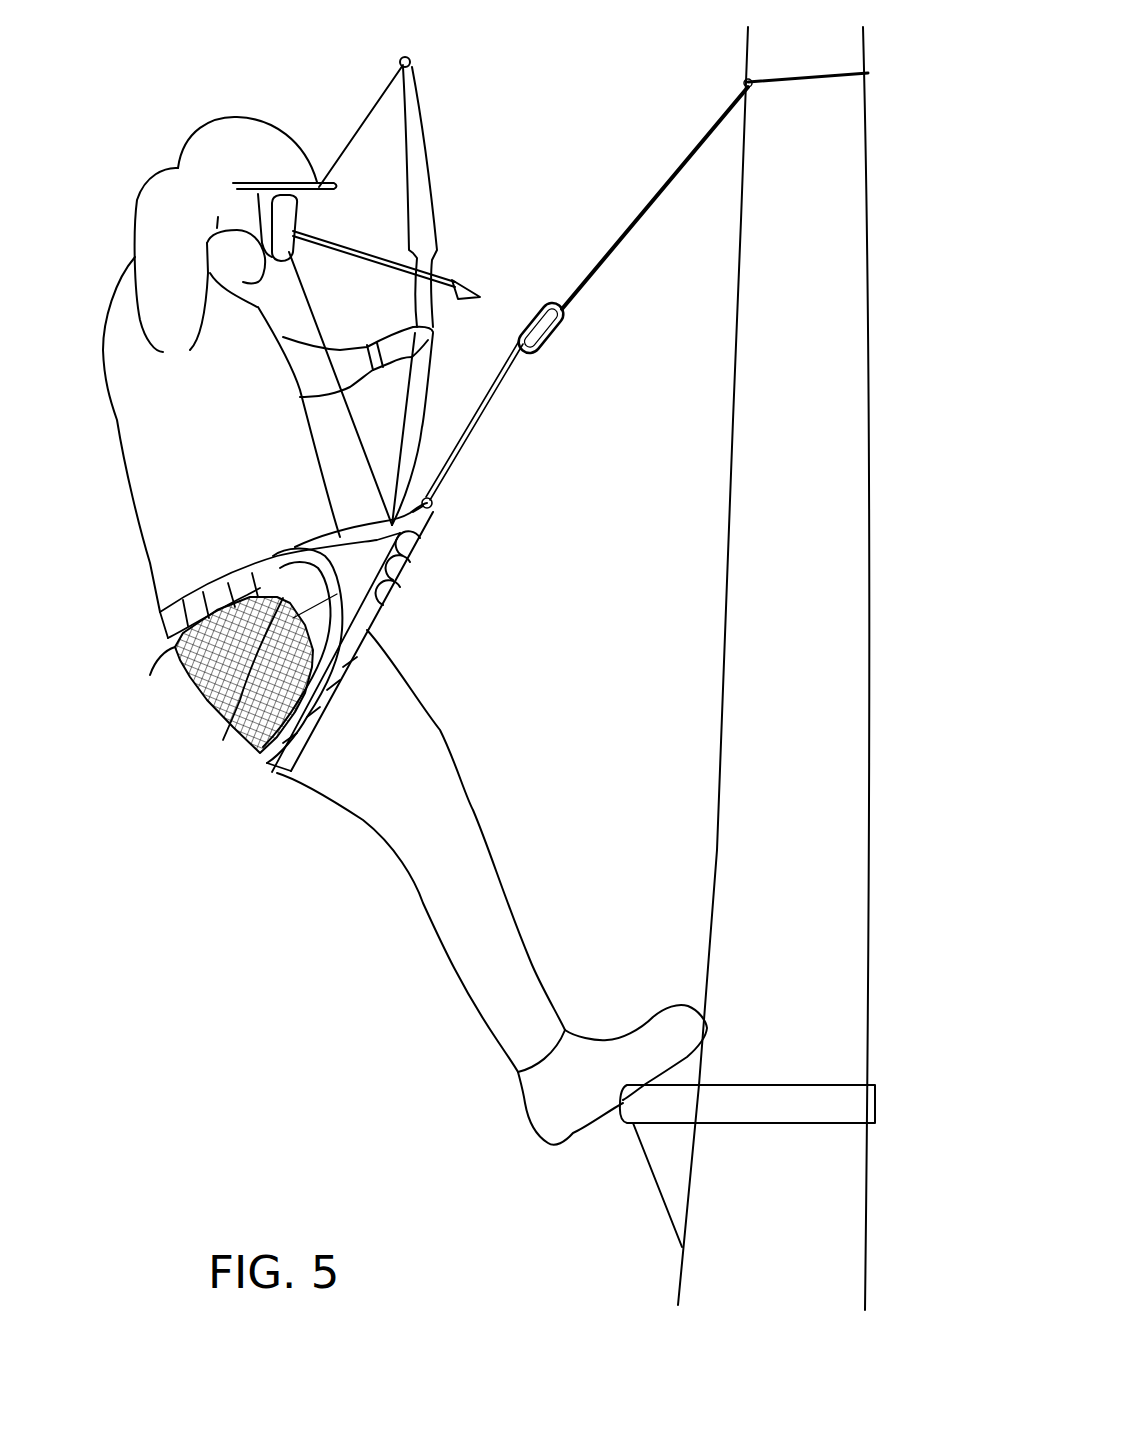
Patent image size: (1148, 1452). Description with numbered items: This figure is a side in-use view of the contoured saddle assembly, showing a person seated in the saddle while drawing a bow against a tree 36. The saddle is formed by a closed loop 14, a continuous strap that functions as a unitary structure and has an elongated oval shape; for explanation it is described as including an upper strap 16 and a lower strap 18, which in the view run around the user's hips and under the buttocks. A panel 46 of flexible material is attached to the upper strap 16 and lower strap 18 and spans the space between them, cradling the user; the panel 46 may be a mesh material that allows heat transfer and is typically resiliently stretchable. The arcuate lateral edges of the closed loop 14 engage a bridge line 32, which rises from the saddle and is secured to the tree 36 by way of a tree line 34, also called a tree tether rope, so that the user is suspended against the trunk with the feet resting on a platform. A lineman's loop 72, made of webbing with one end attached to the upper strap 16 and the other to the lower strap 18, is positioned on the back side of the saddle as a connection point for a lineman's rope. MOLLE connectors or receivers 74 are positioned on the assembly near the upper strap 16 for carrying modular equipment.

The closed loop 14 is at (367, 632).
The upper strap 16 is at (160, 608).
The lower strap 18 is at (283, 765).
The bridge line 32 is at (488, 413).
The tree line 34 is at (627, 229).
The tree 36 is at (870, 478).
The panel 46 is at (197, 700).
The lineman's loops 72 is at (223, 740).
The MOLLE connectors/receivers 74 is at (183, 617).